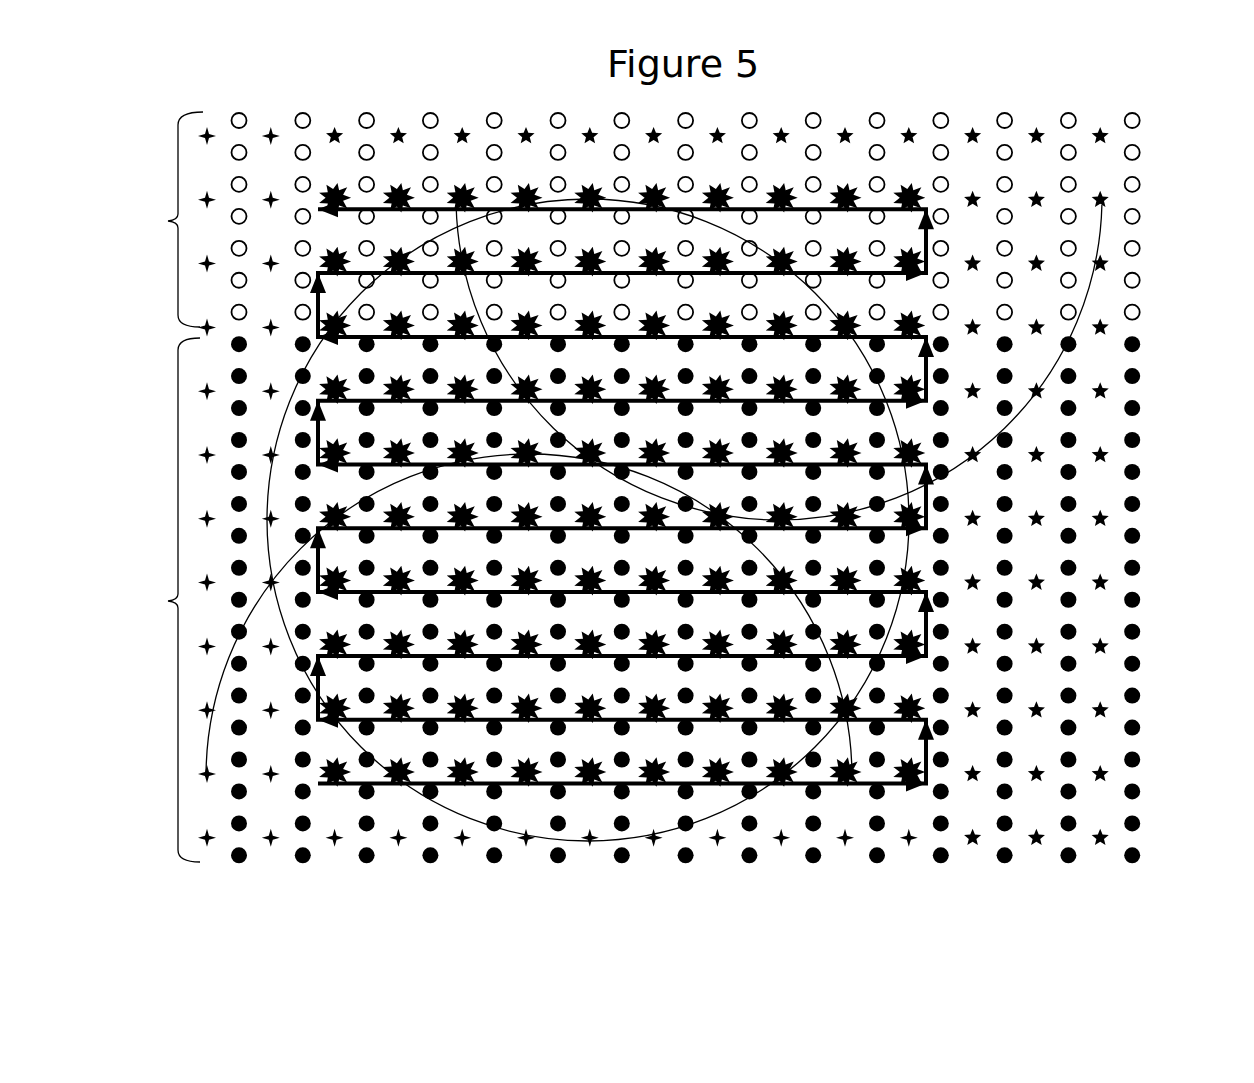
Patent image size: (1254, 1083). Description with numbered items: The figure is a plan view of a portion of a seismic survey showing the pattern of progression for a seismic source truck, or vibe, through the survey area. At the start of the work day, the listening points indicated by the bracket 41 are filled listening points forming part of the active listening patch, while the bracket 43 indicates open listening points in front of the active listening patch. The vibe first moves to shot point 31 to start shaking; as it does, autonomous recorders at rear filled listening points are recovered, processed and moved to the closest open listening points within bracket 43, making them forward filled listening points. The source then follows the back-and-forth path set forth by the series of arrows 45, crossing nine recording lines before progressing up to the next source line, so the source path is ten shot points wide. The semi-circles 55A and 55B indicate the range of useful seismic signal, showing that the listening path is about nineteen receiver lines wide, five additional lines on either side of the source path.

The shot point 31 is at (358, 787).
The bracket 41 is at (167, 601).
The bracket 43 is at (167, 221).
The series of arrows 45 is at (932, 222).
The semi-circle 55A is at (807, 613).
The semi-circle 55B is at (1062, 362).